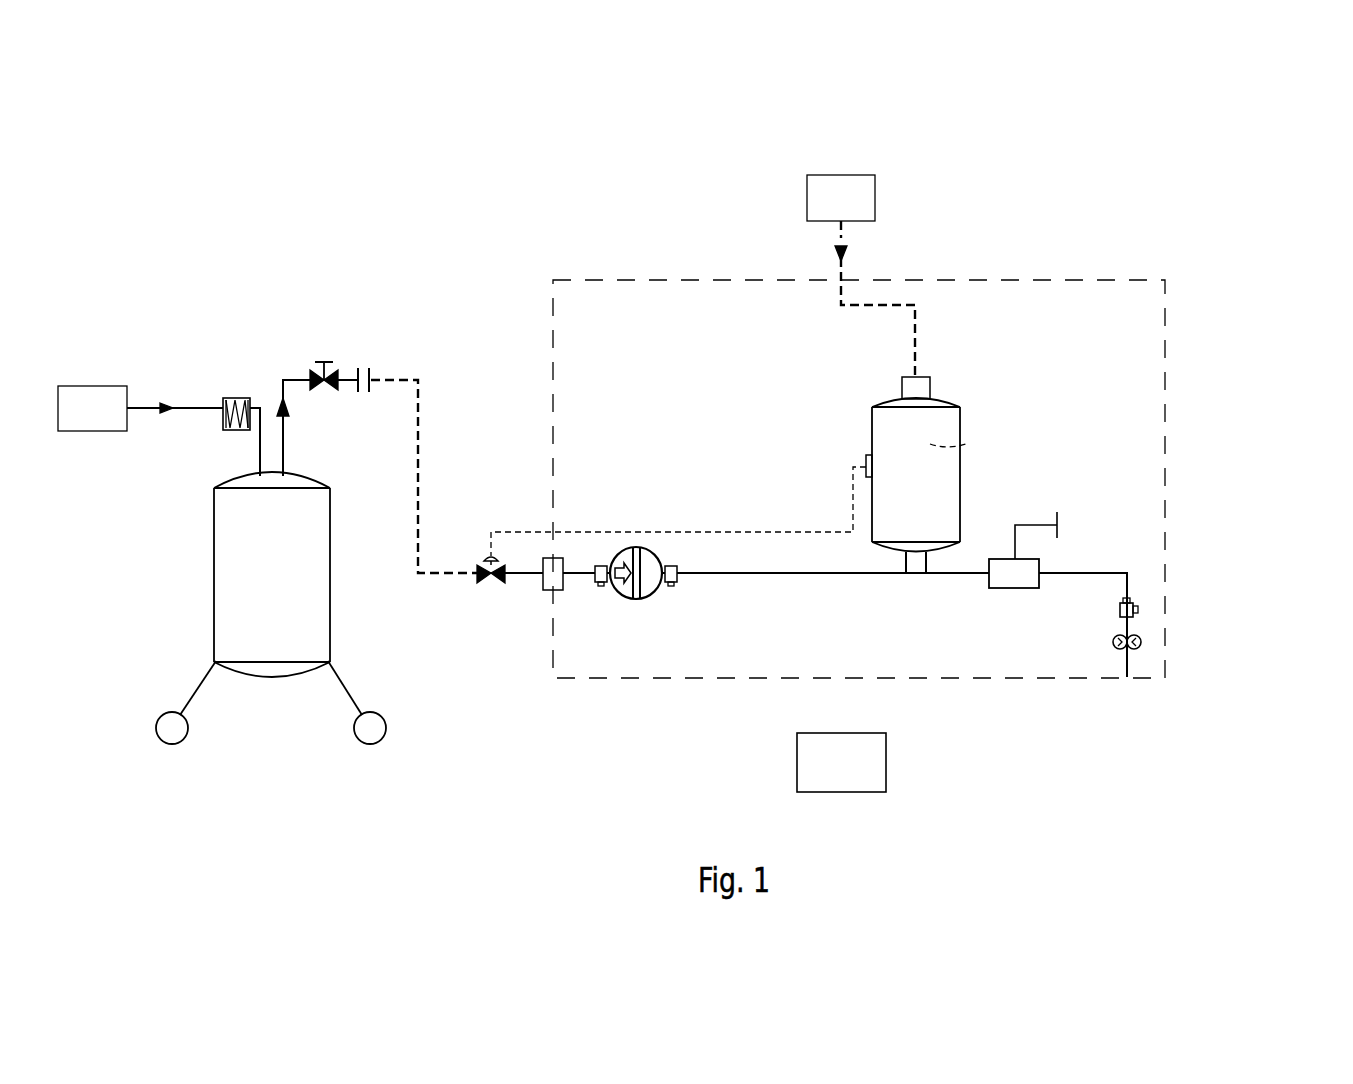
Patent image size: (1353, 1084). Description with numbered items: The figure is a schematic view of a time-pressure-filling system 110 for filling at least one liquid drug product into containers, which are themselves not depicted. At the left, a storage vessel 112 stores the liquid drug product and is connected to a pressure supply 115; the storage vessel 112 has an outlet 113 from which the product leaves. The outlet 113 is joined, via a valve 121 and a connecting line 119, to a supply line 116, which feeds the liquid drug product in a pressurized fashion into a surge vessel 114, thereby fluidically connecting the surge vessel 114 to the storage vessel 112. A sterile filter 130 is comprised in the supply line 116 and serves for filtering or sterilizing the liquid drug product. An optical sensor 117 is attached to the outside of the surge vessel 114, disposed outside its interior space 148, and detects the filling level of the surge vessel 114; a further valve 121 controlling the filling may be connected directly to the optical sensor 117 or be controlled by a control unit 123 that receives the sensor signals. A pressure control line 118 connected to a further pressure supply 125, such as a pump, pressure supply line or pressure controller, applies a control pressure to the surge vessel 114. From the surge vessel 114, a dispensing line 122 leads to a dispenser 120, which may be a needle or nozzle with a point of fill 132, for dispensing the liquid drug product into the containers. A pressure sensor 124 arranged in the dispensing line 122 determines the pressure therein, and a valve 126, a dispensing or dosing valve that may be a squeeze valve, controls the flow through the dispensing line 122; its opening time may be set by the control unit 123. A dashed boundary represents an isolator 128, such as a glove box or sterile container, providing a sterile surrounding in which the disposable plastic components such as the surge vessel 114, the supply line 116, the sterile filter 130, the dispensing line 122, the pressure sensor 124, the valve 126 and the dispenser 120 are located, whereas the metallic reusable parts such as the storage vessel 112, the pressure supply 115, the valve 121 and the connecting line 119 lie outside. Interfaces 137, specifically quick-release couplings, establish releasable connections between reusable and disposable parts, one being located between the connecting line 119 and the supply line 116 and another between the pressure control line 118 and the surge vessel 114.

The time-pressure-filling system 110 is at (1253, 242).
The storage vessel 112 is at (213, 578).
The outlet 113 is at (284, 470).
The surge vessel 114 is at (961, 490).
The pressure supply 115 is at (110, 420).
The supply line 116 is at (777, 577).
The optical sensor 117 is at (865, 462).
The pressure control line 118 is at (918, 340).
The connecting line 119 is at (452, 570).
The dispenser 120 is at (1191, 642).
The valve 121 is at (323, 360).
The dispensing line 122 is at (962, 577).
The control unit 123 is at (858, 773).
The pressure sensor 124 is at (1015, 590).
The further pressure supply 125 is at (858, 209).
The valve 126 is at (1140, 608).
The isolator 128 is at (657, 278).
The sterile filter 130 is at (637, 600).
The point of fill 132 is at (1142, 642).
The interface 137 is at (932, 388).
The interior space 148 is at (966, 444).